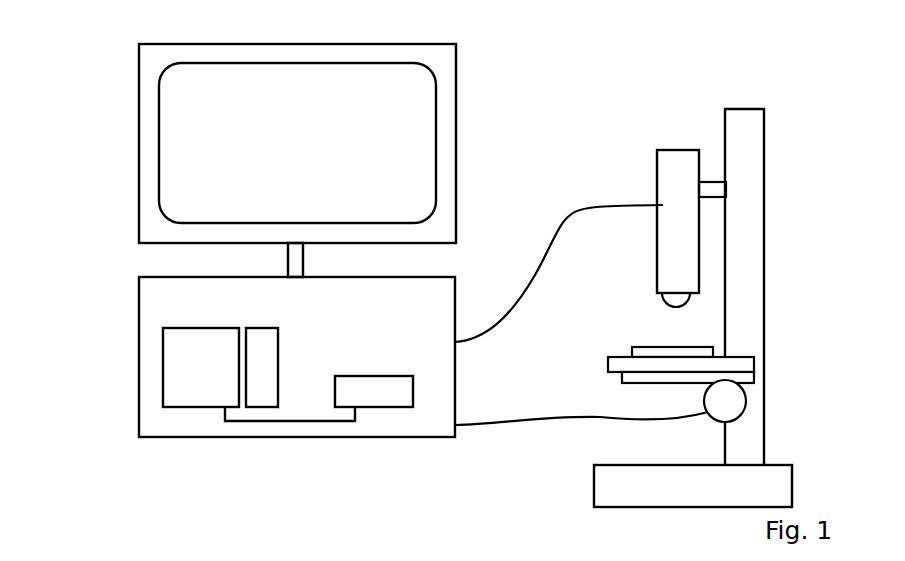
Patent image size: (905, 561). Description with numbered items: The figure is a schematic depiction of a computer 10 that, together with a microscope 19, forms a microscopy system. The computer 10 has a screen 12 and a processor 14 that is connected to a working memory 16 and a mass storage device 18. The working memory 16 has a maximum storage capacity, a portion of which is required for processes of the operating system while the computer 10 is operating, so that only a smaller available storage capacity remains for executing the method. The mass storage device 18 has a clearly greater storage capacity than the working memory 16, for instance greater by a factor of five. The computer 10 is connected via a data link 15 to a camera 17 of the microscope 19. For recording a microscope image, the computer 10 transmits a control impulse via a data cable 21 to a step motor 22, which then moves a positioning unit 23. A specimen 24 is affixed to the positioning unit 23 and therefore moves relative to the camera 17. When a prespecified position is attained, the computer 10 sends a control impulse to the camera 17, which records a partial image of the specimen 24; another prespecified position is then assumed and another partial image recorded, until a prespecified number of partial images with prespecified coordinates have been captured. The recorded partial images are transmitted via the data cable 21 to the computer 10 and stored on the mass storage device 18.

The computer 10 is at (125, 57).
The screen 12 is at (417, 120).
The processor 14 is at (187, 391).
The working memory 16 is at (260, 387).
The mass storage device 18 is at (382, 396).
The data link 15 is at (590, 206).
The camera 17 is at (677, 160).
The microscope 19 is at (770, 92).
The data cable 21 is at (515, 430).
The step motor 22 is at (728, 401).
The positioning unit 23 is at (728, 365).
The specimen 24 is at (700, 352).